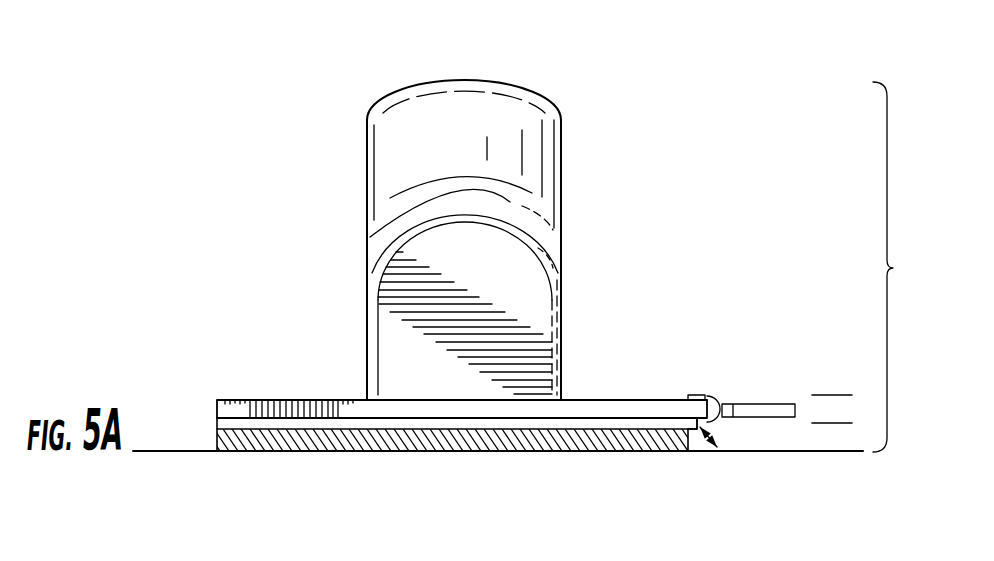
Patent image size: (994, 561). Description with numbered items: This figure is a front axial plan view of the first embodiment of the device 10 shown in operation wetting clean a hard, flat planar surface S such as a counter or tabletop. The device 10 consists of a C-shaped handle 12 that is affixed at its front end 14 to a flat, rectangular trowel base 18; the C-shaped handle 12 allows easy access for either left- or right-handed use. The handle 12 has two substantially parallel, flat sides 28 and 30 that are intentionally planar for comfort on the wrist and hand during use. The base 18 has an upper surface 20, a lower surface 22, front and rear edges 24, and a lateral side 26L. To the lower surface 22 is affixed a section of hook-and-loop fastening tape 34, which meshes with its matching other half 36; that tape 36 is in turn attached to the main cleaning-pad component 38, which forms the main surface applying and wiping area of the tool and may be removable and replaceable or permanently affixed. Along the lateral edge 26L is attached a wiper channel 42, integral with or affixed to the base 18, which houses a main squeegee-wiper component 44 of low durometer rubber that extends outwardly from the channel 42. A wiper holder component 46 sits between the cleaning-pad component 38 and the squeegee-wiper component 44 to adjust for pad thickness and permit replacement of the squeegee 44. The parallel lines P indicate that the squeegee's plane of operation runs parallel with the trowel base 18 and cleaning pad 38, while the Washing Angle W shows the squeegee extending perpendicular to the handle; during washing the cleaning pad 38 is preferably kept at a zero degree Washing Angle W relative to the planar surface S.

The device 10 is at (898, 267).
The C-shaped handle 12 is at (592, 146).
The front end 14 is at (487, 396).
The trowel base 18 is at (249, 375).
The upper surface 20 is at (287, 398).
The lower surface 22 is at (330, 417).
The front and rear edges 24 is at (625, 412).
The left lateral side 26L is at (708, 430).
The handle side 28 is at (563, 131).
The handle side 30 is at (381, 163).
The hook-and-loop fastening tape 34 is at (400, 417).
The matching hook-and-loop tape half 36 is at (262, 432).
The cleaning-pad component 38 is at (340, 442).
The wiper channel 42 is at (717, 397).
The squeegee-wiper component 44 is at (746, 402).
The wiper holder component 46 is at (696, 396).
The Washing Angle W is at (703, 440).
The planar surface S is at (736, 452).
The parallel lines P is at (834, 394).